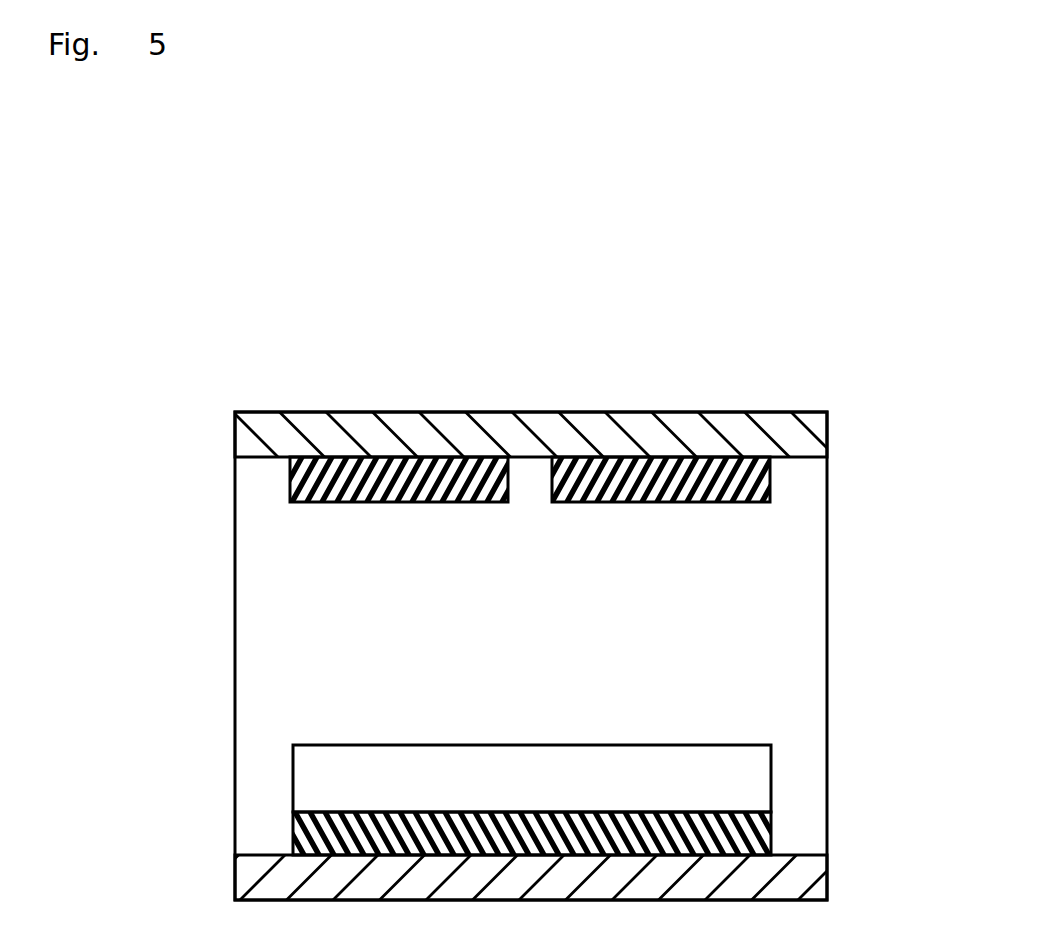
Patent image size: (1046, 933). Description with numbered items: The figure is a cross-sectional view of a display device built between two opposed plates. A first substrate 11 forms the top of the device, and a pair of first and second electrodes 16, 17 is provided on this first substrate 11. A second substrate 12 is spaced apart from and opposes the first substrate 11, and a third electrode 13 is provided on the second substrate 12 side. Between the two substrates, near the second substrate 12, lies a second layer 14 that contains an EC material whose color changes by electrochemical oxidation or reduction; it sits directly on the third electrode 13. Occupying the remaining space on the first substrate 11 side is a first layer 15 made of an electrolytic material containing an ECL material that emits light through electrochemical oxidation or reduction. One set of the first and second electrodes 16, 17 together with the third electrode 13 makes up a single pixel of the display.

The first substrate 11 is at (807, 437).
The second substrate 12 is at (812, 887).
The third electrode 13 is at (737, 833).
The second layer 14 is at (737, 780).
The first layer 15 is at (810, 570).
The first electrode 16 is at (402, 463).
The second electrode 17 is at (660, 463).